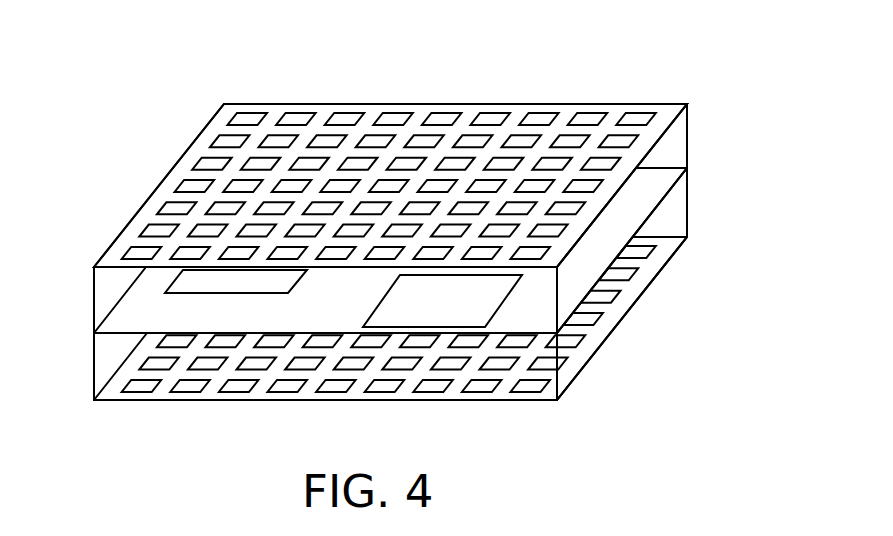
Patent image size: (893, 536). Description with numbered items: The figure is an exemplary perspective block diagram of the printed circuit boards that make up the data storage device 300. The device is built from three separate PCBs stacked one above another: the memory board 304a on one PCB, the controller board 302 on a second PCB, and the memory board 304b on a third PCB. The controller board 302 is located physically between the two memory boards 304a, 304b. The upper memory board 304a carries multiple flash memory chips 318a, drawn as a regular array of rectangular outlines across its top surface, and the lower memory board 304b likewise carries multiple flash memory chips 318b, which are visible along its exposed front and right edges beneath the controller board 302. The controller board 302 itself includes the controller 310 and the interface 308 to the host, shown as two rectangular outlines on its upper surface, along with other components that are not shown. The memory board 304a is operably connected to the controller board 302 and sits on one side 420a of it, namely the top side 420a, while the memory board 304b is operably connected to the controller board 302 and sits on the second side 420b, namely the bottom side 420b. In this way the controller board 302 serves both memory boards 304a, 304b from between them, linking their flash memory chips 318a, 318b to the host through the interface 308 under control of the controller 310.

The data storage device 300 is at (473, 51).
The controller board 302 is at (122, 298).
The memory board 304a is at (188, 148).
The memory board 304b is at (120, 385).
The interface 308 is at (371, 316).
The controller 310 is at (256, 294).
The flash memory chips 318a is at (641, 113).
The flash memory chips 318b is at (525, 392).
The top side 420a is at (650, 188).
The bottom side 420b is at (652, 240).